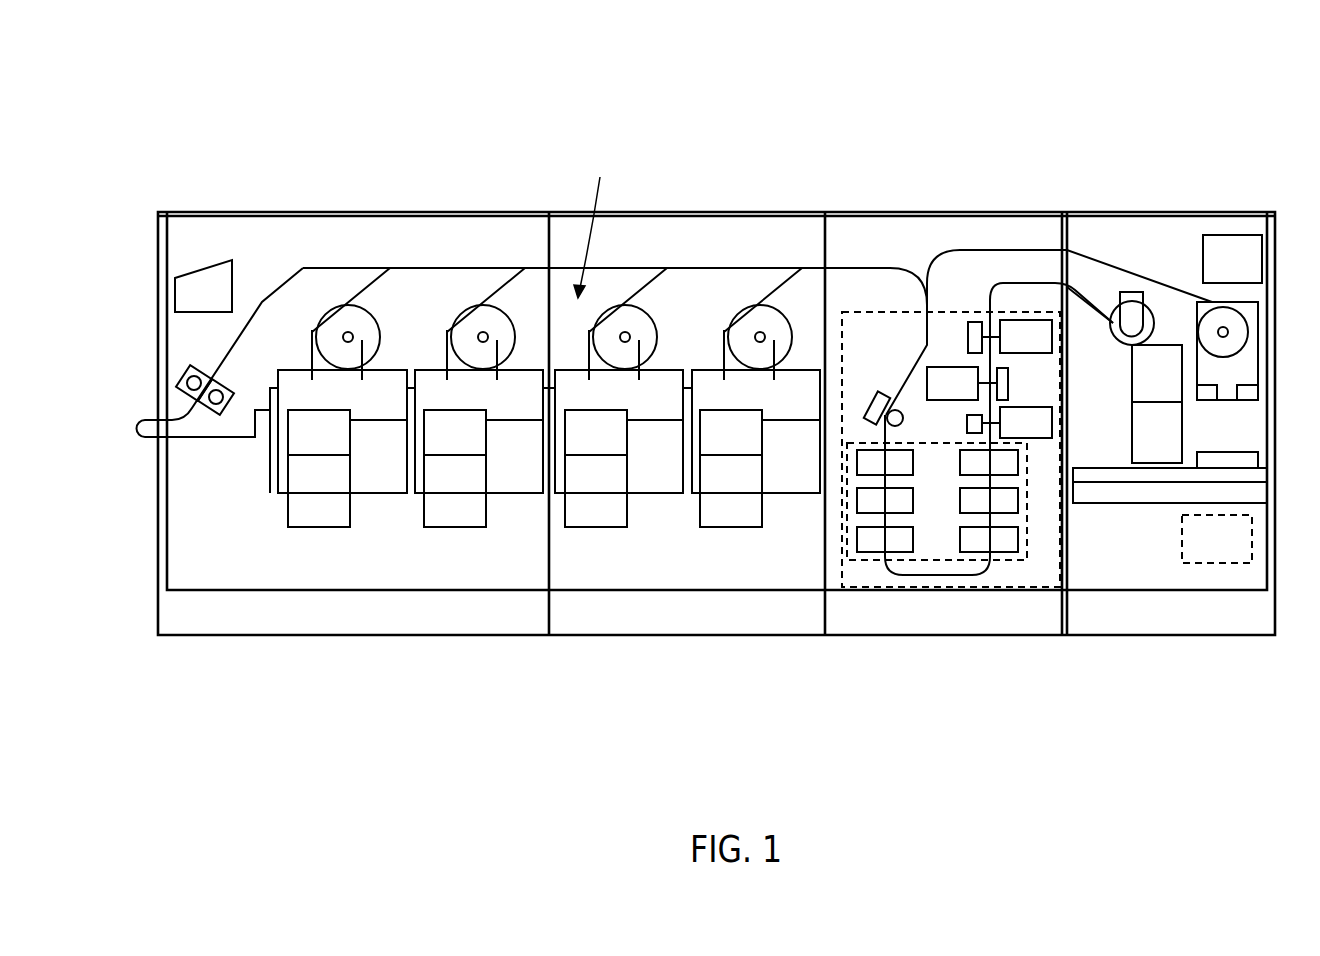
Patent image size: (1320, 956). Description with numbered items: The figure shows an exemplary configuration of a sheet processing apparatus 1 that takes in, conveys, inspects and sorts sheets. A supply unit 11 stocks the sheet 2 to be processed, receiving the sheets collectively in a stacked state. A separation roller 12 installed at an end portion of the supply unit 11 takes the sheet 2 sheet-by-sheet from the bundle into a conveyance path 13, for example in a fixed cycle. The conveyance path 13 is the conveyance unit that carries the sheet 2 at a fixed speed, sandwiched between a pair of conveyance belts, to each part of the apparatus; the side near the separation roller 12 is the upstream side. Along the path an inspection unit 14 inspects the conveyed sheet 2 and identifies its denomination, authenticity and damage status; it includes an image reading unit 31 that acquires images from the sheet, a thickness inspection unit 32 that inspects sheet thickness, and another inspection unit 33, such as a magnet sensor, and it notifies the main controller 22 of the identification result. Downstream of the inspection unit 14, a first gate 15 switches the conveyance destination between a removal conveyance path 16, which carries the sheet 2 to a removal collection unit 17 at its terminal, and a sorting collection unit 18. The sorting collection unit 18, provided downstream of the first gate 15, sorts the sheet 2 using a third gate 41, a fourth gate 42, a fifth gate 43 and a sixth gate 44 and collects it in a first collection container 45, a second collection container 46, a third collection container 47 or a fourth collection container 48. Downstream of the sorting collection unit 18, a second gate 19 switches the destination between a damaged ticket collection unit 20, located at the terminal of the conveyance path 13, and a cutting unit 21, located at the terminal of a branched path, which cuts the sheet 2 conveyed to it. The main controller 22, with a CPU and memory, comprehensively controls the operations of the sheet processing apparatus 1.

The sheet processing apparatus 1 is at (826, 103).
The sheet 2 is at (1150, 425).
The supply unit 11 is at (1157, 455).
The separation roller 12 is at (1113, 305).
The conveyance path 13 is at (1100, 320).
The inspection unit 14 is at (873, 590).
The first gate 15 is at (925, 312).
The removal conveyance path 16 is at (1166, 283).
The removal collection unit 17 is at (1228, 370).
The sorting collection unit 18 is at (595, 220).
The second gate 19 is at (305, 268).
The damaged ticket collection unit 20 is at (205, 282).
The cutting unit 21 is at (230, 410).
The main controller 22 is at (1218, 555).
The image reading unit 31 is at (1035, 335).
The thickness inspection unit 32 is at (873, 392).
The other inspection unit 33 is at (937, 563).
The third gate 41 is at (803, 268).
The fourth gate 42 is at (668, 268).
The fifth gate 43 is at (523, 268).
The sixth gate 44 is at (387, 268).
The first collection container 45 is at (789, 478).
The second collection container 46 is at (654, 478).
The third collection container 47 is at (512, 478).
The fourth collection container 48 is at (380, 478).